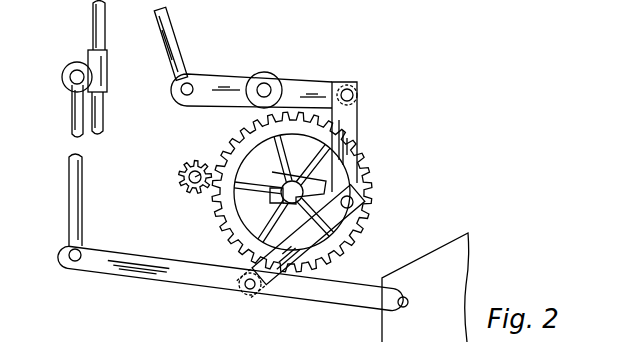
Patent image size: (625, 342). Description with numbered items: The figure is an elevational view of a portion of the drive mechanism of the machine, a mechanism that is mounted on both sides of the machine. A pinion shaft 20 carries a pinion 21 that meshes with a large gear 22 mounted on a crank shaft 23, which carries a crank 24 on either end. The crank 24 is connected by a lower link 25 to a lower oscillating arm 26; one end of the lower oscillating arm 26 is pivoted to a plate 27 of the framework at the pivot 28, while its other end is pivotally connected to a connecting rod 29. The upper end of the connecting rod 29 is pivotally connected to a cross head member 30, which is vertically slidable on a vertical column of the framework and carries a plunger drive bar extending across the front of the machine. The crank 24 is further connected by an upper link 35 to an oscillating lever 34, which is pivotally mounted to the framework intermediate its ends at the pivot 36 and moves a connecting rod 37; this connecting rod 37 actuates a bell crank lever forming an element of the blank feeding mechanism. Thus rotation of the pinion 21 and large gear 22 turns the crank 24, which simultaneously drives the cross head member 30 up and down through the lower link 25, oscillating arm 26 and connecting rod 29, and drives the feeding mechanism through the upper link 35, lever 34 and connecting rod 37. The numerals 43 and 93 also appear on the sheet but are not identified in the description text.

The pinion shaft 20 is at (180, 179).
The pinion 21 is at (192, 162).
The large gear 22 is at (220, 208).
The crank shaft 23 is at (282, 196).
The crank 24 is at (302, 172).
The lower link 25 is at (320, 244).
The lower oscillating arm 26 is at (291, 289).
The plate 27 is at (456, 269).
The pivot 28 is at (406, 306).
The connecting rod 29 is at (71, 216).
The cross head member 30 is at (88, 60).
The oscillating lever 34 is at (303, 90).
The upper link 35 is at (352, 133).
The pivot 36 is at (265, 89).
The connecting rod 37 is at (170, 32).
The element 43 is at (121, 333).
The element 93 is at (169, 336).